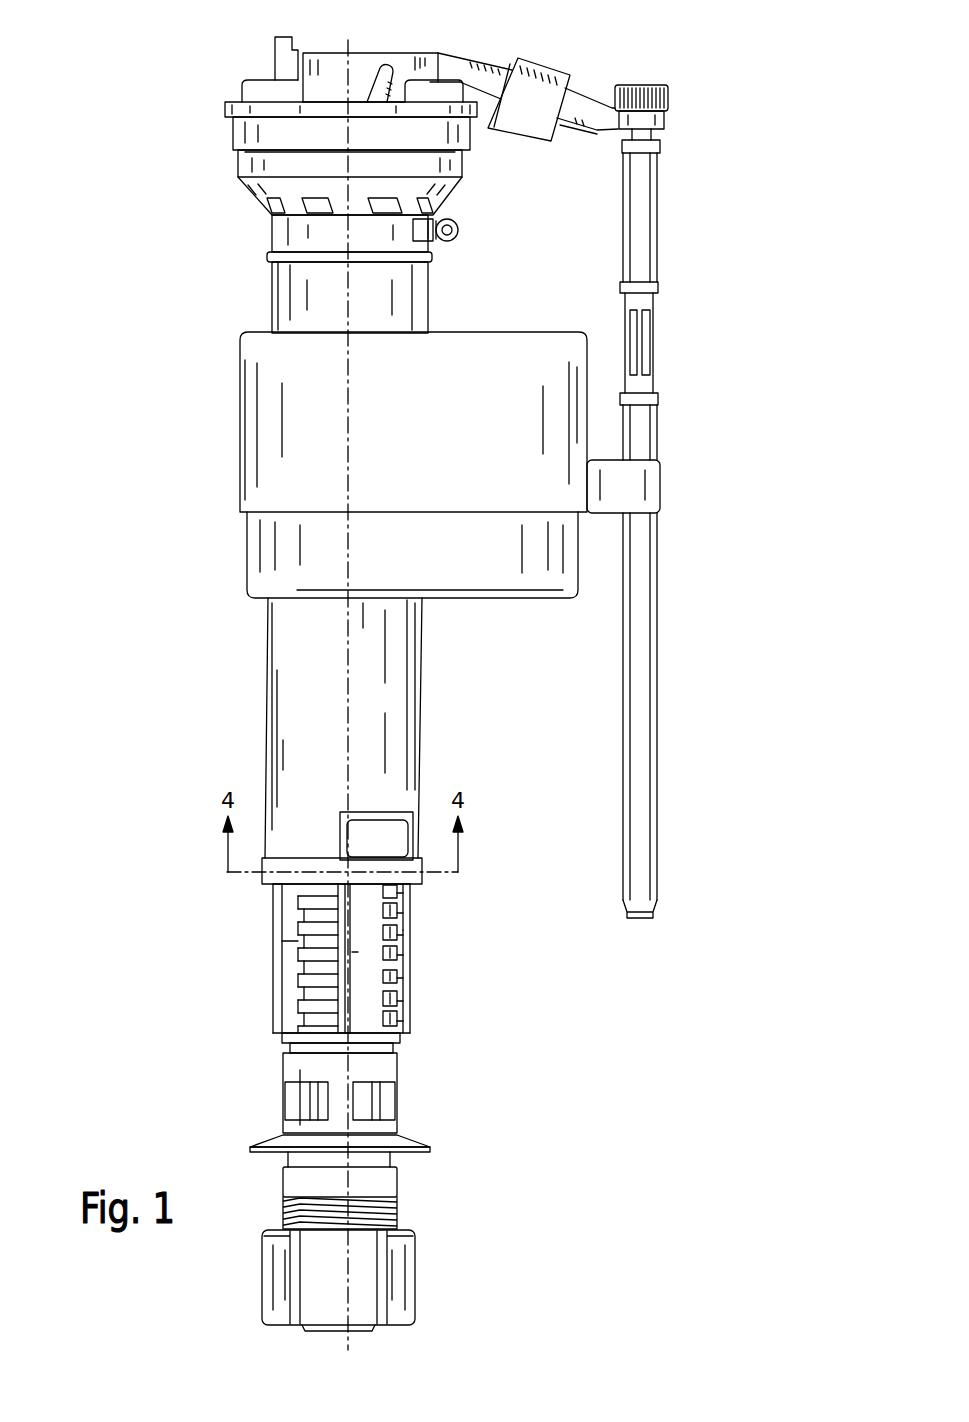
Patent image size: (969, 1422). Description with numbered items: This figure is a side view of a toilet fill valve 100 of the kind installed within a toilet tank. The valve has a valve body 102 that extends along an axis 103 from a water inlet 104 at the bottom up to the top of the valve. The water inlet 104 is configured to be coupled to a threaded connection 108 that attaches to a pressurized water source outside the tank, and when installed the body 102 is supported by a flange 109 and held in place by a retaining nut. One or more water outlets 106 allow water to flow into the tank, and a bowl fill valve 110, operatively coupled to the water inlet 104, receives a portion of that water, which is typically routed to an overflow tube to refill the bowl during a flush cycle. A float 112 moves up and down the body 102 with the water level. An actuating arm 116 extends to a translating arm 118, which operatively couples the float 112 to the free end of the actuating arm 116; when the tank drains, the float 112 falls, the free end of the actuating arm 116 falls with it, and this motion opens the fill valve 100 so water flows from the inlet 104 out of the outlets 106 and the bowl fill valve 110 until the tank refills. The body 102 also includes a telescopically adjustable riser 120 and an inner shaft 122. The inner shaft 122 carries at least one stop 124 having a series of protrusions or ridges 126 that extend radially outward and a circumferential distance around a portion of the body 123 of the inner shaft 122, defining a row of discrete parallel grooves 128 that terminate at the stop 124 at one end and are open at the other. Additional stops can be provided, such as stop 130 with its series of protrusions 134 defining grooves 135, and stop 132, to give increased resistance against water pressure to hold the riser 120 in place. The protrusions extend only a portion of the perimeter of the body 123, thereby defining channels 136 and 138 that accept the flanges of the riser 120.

The toilet fill valve 100 is at (200, 68).
The valve body 102 is at (200, 625).
The axis 103 is at (347, 45).
The water inlet 104 is at (315, 1328).
The water outlet 106 is at (390, 1103).
The threaded connection 108 is at (280, 1280).
The flange 109 is at (278, 1142).
The bowl fill valve 110 is at (450, 240).
The float 112 is at (487, 562).
The actuating arm 116 is at (583, 103).
The translating arm 118 is at (633, 238).
The telescopically adjustable riser 120 is at (300, 718).
The inner shaft 122 is at (168, 902).
The body of inner shaft 123 is at (405, 900).
The stop 124 is at (346, 911).
The protrusions or ridges 126 is at (300, 921).
The grooves 128 is at (318, 893).
The stop 130 is at (403, 965).
The stop 132 is at (270, 1025).
The protrusions 134 is at (400, 998).
The grooves 135 is at (400, 983).
The channel 136 is at (268, 941).
The channel 138 is at (372, 951).